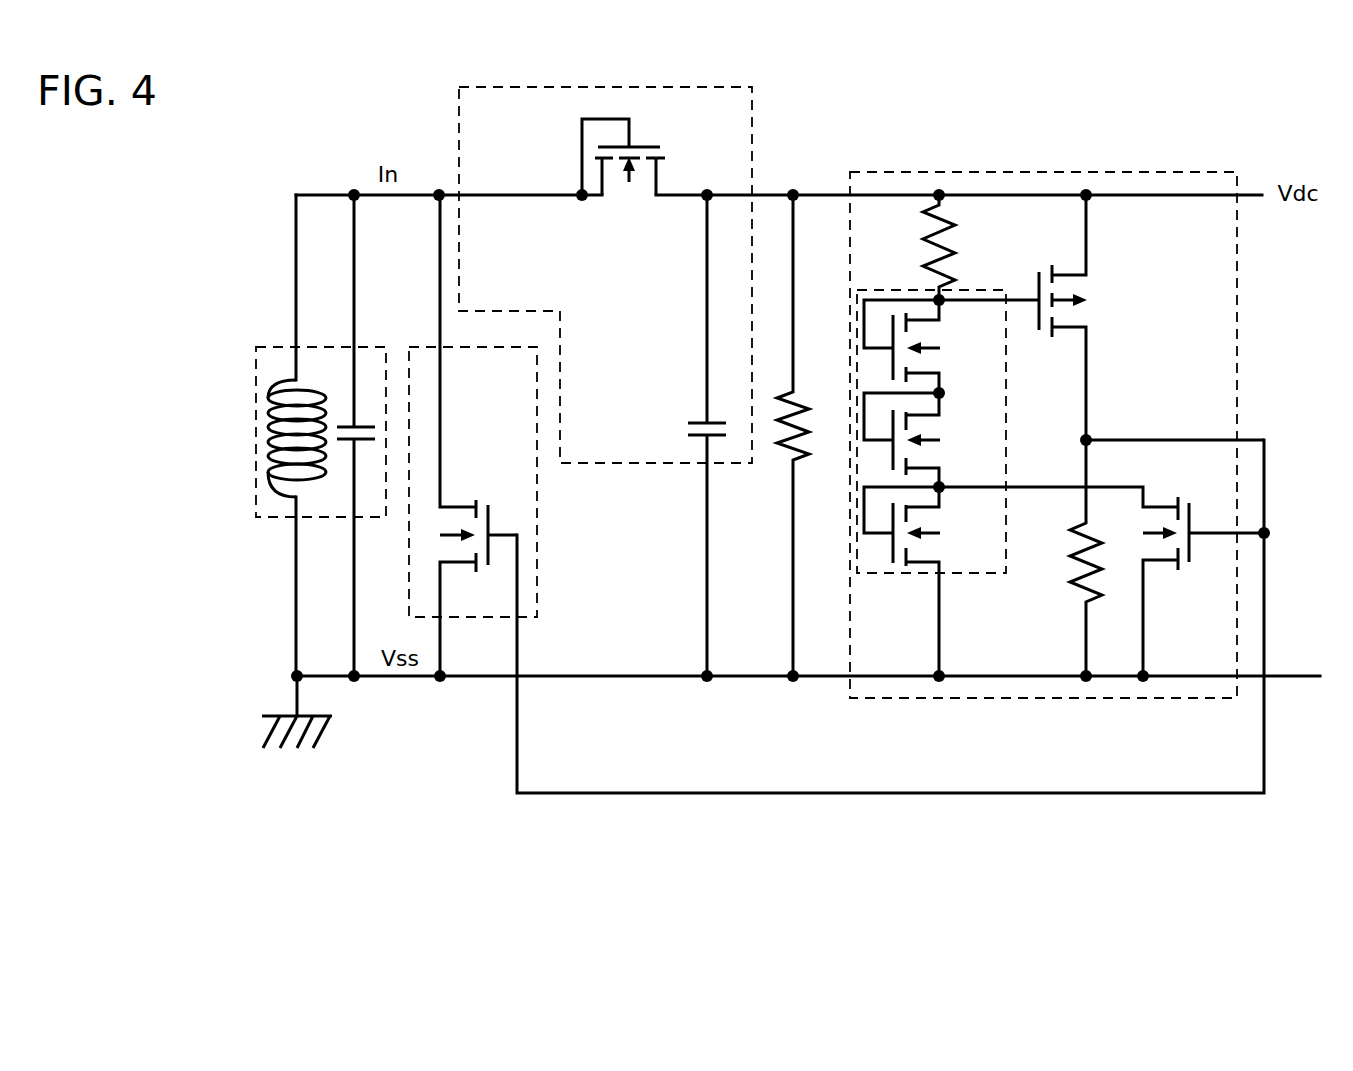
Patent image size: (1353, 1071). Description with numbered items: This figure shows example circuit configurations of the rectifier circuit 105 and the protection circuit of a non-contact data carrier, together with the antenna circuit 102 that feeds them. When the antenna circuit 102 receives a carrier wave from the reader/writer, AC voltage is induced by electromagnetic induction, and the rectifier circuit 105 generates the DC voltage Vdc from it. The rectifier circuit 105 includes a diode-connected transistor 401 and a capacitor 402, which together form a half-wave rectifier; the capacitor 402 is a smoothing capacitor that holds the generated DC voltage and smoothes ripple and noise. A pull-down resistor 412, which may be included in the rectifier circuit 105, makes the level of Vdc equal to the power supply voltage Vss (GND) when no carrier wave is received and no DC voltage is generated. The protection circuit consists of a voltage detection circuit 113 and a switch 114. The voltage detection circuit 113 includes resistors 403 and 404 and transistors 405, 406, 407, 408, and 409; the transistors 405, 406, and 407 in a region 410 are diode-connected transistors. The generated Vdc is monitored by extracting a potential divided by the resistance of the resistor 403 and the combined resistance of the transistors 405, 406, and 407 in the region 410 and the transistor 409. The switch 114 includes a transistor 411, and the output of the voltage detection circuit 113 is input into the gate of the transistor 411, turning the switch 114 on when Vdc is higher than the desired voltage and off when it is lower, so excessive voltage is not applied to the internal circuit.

The antenna circuit 102 is at (256, 347).
The rectifier circuit 105 is at (459, 112).
The voltage detection circuit 113 is at (958, 170).
The switch 114 is at (409, 616).
The diode-connected transistor 401 is at (634, 152).
The capacitor 402 is at (682, 435).
The resistor 403 is at (915, 247).
The resistor 404 is at (1062, 558).
The transistor 405 is at (928, 346).
The transistor 406 is at (928, 440).
The transistor 407 is at (928, 581).
The transistor 408 is at (1013, 317).
The transistor 409 is at (1101, 558).
The region 410 is at (906, 573).
The transistor 411 is at (478, 435).
The pull-down resistor 412 is at (787, 450).